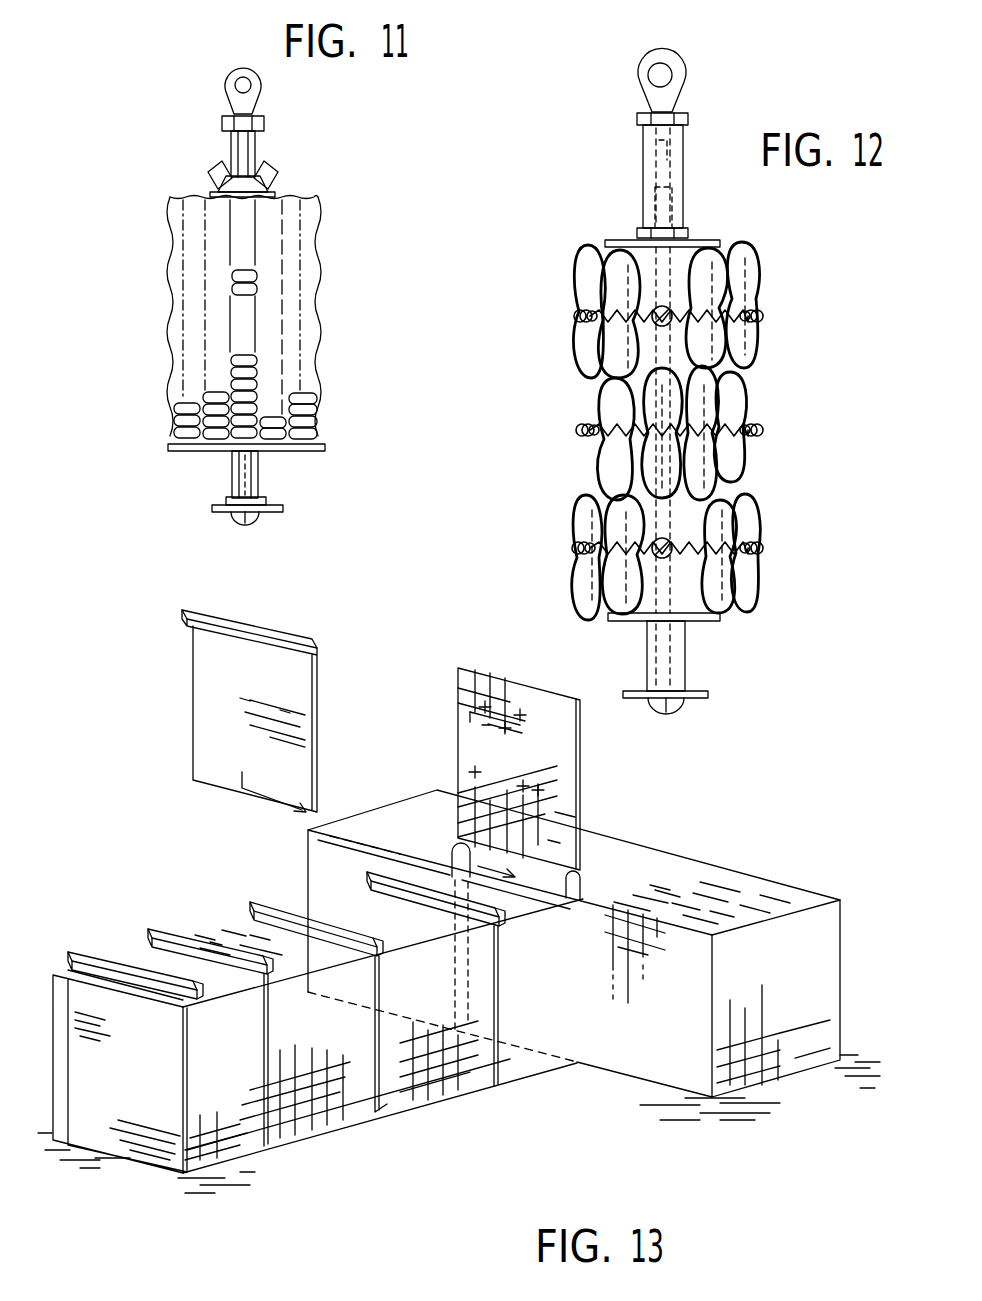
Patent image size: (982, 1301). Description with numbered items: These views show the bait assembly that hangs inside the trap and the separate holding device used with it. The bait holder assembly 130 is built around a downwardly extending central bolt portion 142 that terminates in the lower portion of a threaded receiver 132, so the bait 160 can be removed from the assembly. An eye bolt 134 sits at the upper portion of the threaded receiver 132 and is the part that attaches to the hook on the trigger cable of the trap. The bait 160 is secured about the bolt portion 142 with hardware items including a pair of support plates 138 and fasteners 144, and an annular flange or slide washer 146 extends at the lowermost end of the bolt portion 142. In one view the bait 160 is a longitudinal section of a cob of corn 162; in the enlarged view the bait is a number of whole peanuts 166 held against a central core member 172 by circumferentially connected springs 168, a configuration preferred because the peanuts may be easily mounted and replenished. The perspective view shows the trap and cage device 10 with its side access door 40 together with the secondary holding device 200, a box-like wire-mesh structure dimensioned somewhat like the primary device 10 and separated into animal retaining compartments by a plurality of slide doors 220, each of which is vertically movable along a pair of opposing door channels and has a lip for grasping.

In FIG. 13, the trap and cage device 10 is at (783, 901).
In FIG. 13, the side access door 40 is at (583, 815).
In FIG. 11, the bait holder assembly 130 is at (148, 286).
In FIG. 12, the bait holder assembly 130 is at (560, 446).
In FIG. 11, the threaded receiver 132 is at (257, 146).
In FIG. 12, the threaded receiver 132 is at (643, 155).
In FIG. 11, the eye bolt 134 is at (262, 95).
In FIG. 12, the eye bolt 134 is at (687, 92).
In FIG. 12, the support plates 138 is at (715, 242).
In FIG. 12, the central bolt portion 142 is at (688, 658).
In FIG. 11, the fasteners 144 is at (210, 178).
In FIG. 12, the fasteners 144 is at (637, 233).
In FIG. 11, the slide washer 146 is at (283, 511).
In FIG. 12, the slide washer 146 is at (708, 695).
In FIG. 11, the bait 160 is at (322, 320).
In FIG. 11, the cob of corn 162 is at (320, 422).
In FIG. 12, the peanuts 166 is at (746, 343).
In FIG. 12, the springs 168 is at (580, 316).
In FIG. 12, the central core member 172 is at (695, 520).
In FIG. 13, the secondary holding device 200 is at (430, 1103).
In FIG. 13, the slide doors 220 is at (207, 733).